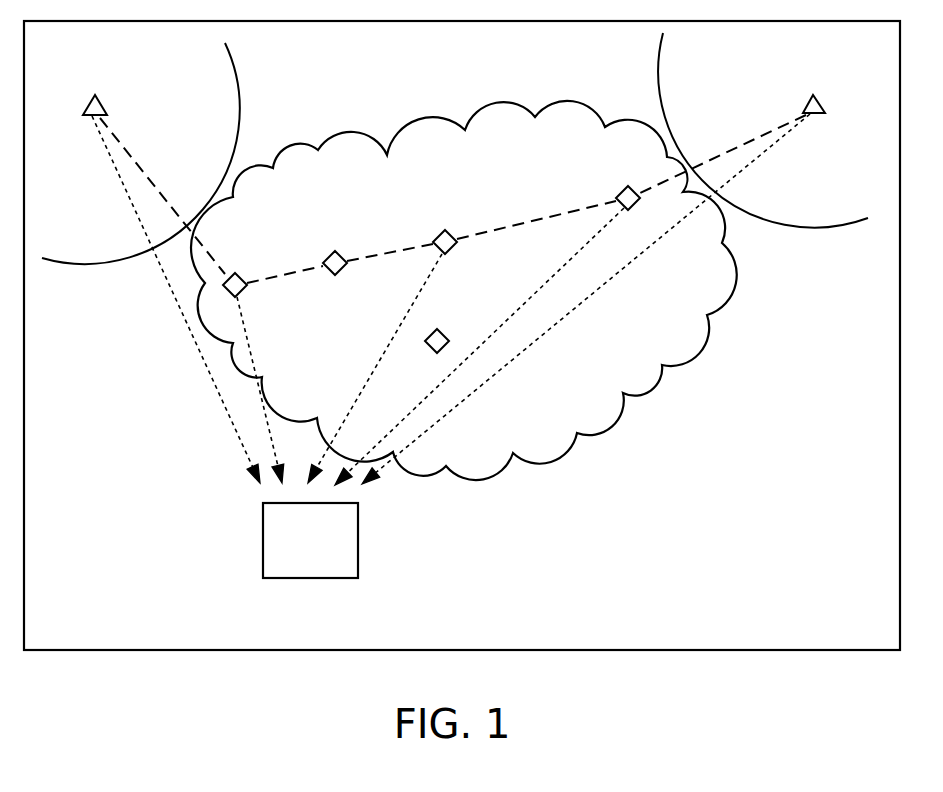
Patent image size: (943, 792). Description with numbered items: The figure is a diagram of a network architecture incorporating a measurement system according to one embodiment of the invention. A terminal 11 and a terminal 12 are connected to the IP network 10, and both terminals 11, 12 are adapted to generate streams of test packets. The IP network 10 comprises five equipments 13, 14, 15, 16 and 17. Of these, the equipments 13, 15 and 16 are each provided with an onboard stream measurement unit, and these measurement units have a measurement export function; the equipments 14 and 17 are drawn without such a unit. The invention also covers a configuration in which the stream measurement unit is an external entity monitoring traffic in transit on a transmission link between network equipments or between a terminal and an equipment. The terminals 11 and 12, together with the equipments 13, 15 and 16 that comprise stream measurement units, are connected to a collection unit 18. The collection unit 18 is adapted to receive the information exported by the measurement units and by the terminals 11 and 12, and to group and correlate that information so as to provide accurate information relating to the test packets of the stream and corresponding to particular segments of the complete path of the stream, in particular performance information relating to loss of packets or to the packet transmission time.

The IP network 10 is at (430, 112).
The terminal 11 is at (100, 103).
The terminal 12 is at (822, 93).
The equipment 13 is at (242, 275).
The equipment 14 is at (328, 273).
The equipment 15 is at (438, 233).
The equipment 16 is at (623, 190).
The equipment 17 is at (448, 328).
The collection unit 18 is at (263, 535).